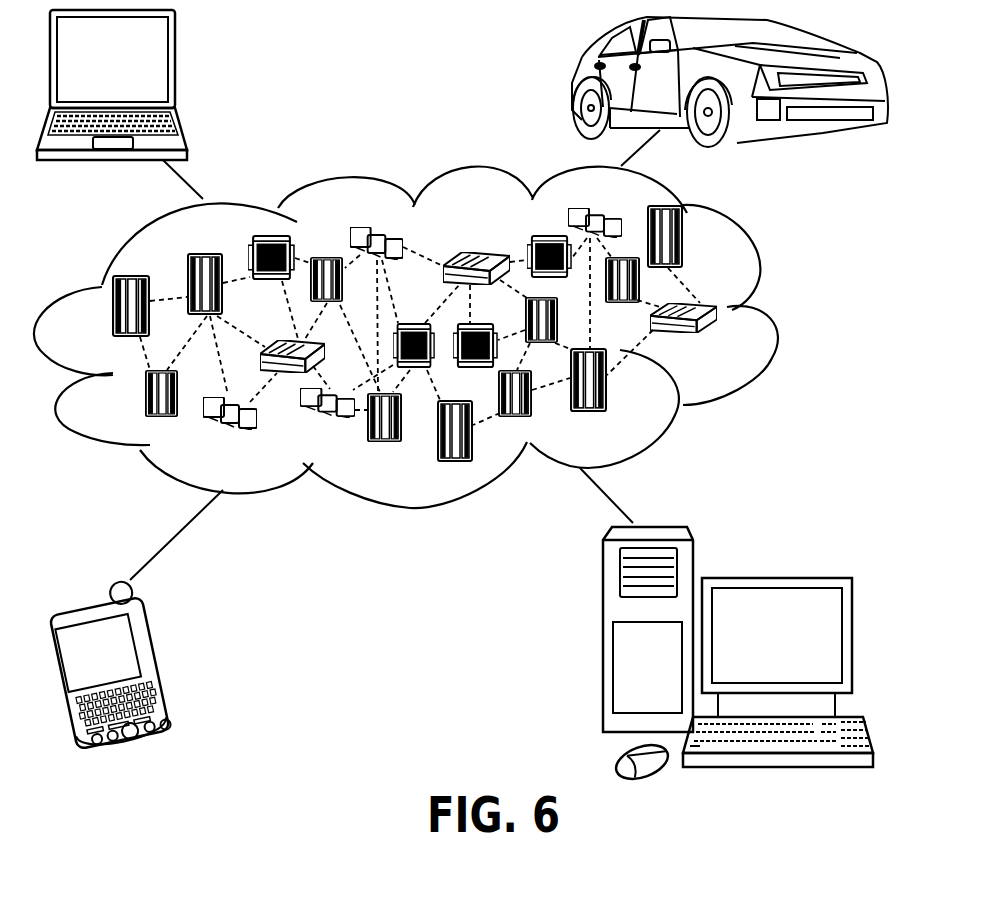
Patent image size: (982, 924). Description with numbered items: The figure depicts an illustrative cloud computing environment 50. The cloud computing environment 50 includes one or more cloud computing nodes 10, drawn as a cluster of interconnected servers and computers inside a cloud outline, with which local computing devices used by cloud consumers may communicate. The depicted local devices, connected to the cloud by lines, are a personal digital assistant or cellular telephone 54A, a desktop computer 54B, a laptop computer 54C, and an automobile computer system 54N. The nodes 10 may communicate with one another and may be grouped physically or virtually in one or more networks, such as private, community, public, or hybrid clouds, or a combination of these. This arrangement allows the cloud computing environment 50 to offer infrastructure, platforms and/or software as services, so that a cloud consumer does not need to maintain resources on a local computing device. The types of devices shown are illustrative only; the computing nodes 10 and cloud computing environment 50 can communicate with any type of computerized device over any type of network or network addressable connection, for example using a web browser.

The cloud computing node 10 is at (729, 345).
The cloud computing environment 50 is at (431, 338).
The personal digital assistant or cellular telephone 54A is at (166, 661).
The desktop computer 54B is at (774, 578).
The laptop computer 54C is at (175, 64).
The automobile computer system 54N is at (575, 82).